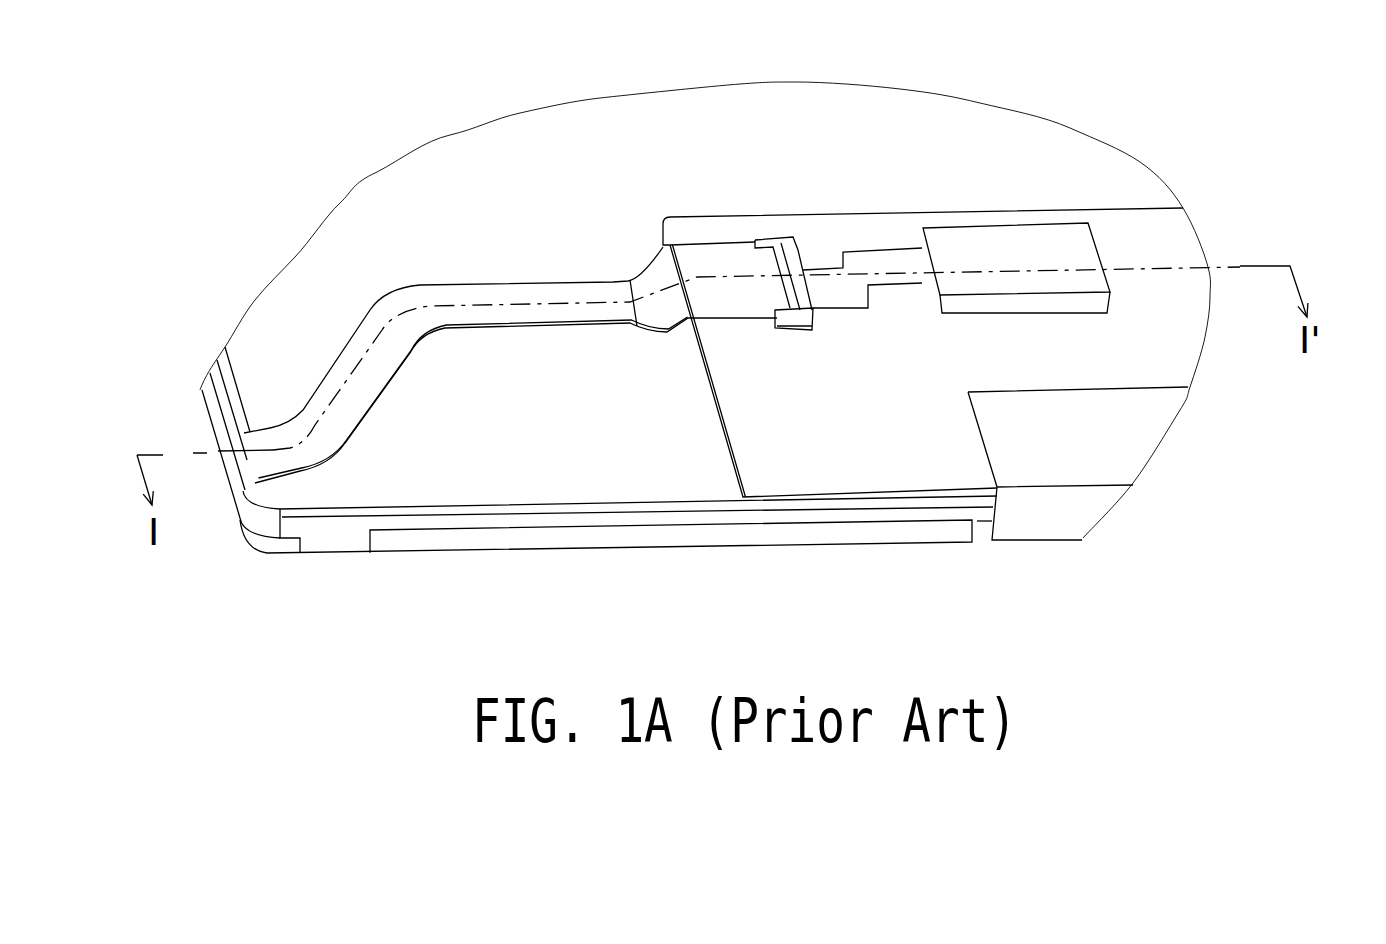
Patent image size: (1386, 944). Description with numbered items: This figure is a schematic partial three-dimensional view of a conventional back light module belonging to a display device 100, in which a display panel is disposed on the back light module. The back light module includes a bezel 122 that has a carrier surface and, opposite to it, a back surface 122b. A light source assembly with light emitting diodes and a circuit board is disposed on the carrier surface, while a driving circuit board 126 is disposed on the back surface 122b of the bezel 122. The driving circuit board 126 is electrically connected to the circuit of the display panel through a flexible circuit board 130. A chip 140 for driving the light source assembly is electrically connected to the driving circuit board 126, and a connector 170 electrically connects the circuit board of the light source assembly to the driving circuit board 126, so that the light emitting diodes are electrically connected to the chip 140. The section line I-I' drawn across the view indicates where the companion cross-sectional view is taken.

The display device 100 is at (1284, 612).
The bezel 122 is at (528, 467).
The back surface 122b is at (492, 202).
The driving circuit board 126 is at (1188, 341).
The flexible circuit board 130 is at (1160, 429).
The chip 140 is at (1028, 245).
The connector 170 is at (789, 250).